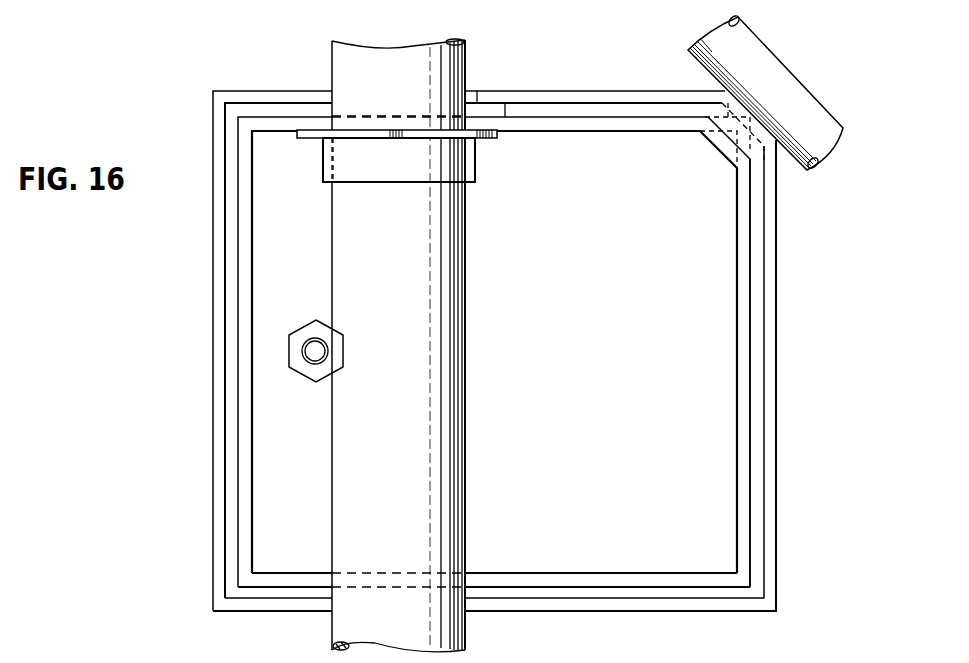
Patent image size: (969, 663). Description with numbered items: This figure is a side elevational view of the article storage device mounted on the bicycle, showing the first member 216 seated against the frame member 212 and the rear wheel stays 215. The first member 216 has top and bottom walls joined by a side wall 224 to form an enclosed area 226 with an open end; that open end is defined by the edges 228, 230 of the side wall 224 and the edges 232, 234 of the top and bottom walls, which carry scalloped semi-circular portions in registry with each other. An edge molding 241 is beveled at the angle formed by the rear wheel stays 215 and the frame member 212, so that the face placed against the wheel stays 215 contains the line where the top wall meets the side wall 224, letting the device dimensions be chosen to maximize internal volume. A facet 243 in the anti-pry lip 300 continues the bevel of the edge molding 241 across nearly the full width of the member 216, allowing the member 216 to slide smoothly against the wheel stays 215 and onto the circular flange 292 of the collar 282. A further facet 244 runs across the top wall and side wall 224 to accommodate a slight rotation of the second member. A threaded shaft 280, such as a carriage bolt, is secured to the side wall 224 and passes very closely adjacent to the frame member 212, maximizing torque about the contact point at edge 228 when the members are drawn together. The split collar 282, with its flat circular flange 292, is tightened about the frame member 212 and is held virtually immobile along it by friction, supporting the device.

The frame member 212 is at (437, 333).
The rear wheel stays 215 is at (793, 85).
The first member 216 is at (783, 331).
The side wall 224 is at (238, 276).
The enclosed area 226 is at (602, 418).
The edge of side wall 228 is at (238, 479).
The edge of side wall 230 is at (742, 447).
The edge of top wall 232 is at (537, 123).
The edge of bottom wall 234 is at (575, 577).
The edge molding 241 is at (778, 150).
The facet 243 is at (708, 78).
The facet 244 is at (723, 148).
The threaded shaft 280 is at (312, 358).
The split collar 282 is at (315, 160).
The circular flange 292 is at (492, 139).
The anti-pry lip 300 is at (274, 97).